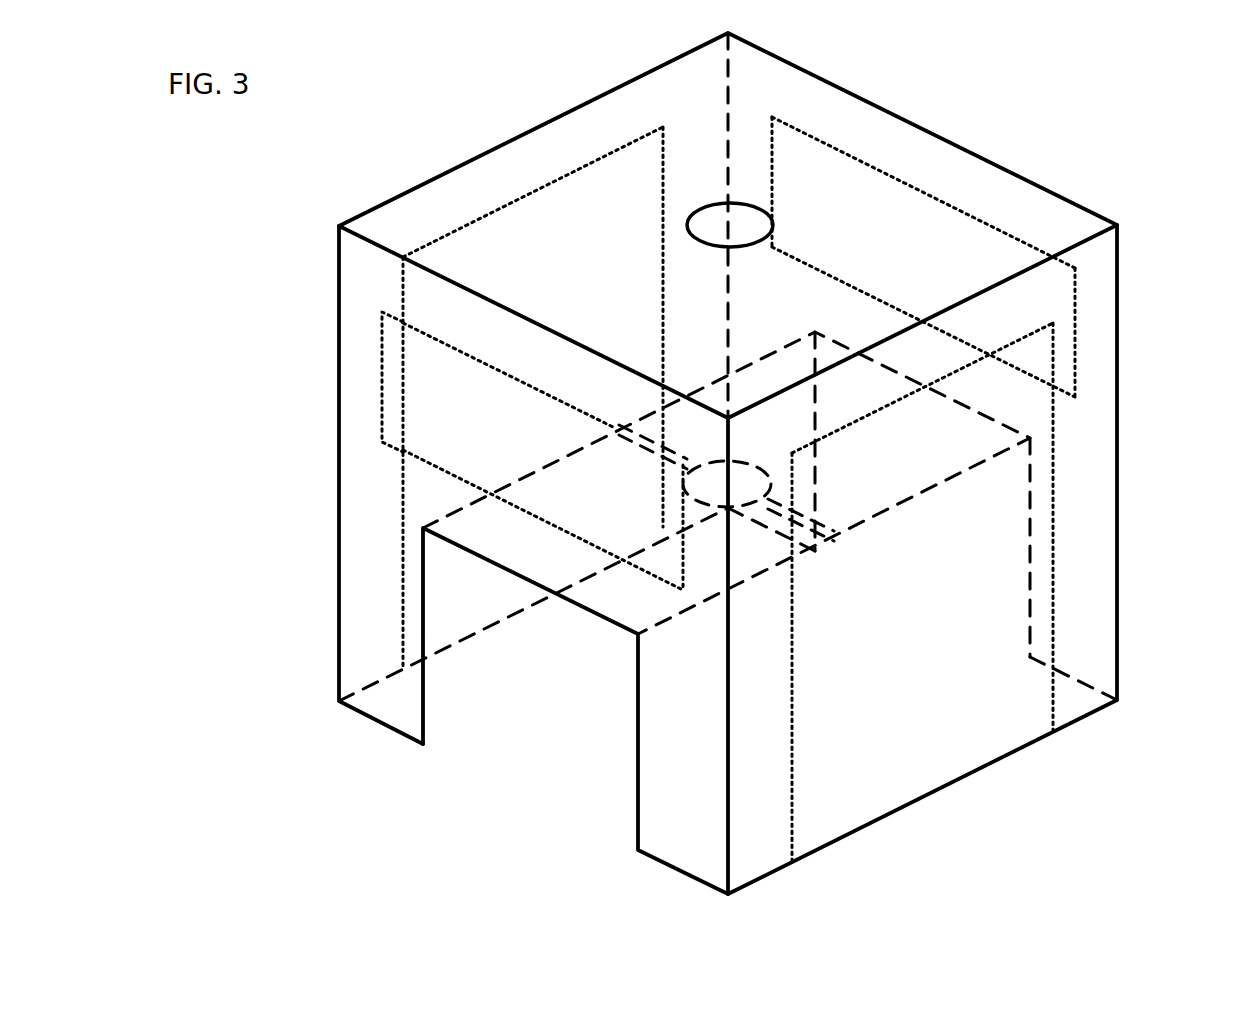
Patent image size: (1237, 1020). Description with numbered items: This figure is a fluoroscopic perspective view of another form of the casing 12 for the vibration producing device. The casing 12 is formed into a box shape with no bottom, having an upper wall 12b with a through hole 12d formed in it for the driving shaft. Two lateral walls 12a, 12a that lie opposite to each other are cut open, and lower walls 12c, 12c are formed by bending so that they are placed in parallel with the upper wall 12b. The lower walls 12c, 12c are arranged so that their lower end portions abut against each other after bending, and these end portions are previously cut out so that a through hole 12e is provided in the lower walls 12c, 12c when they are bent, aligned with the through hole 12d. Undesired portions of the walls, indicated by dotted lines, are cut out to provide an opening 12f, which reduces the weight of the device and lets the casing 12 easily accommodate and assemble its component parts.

The casing 12 is at (933, 165).
The lateral wall 12a is at (1093, 295).
The upper wall 12b is at (552, 138).
The lower wall 12c is at (972, 433).
The through hole 12d is at (750, 222).
The through hole 12e is at (703, 500).
The opening 12f is at (482, 247).